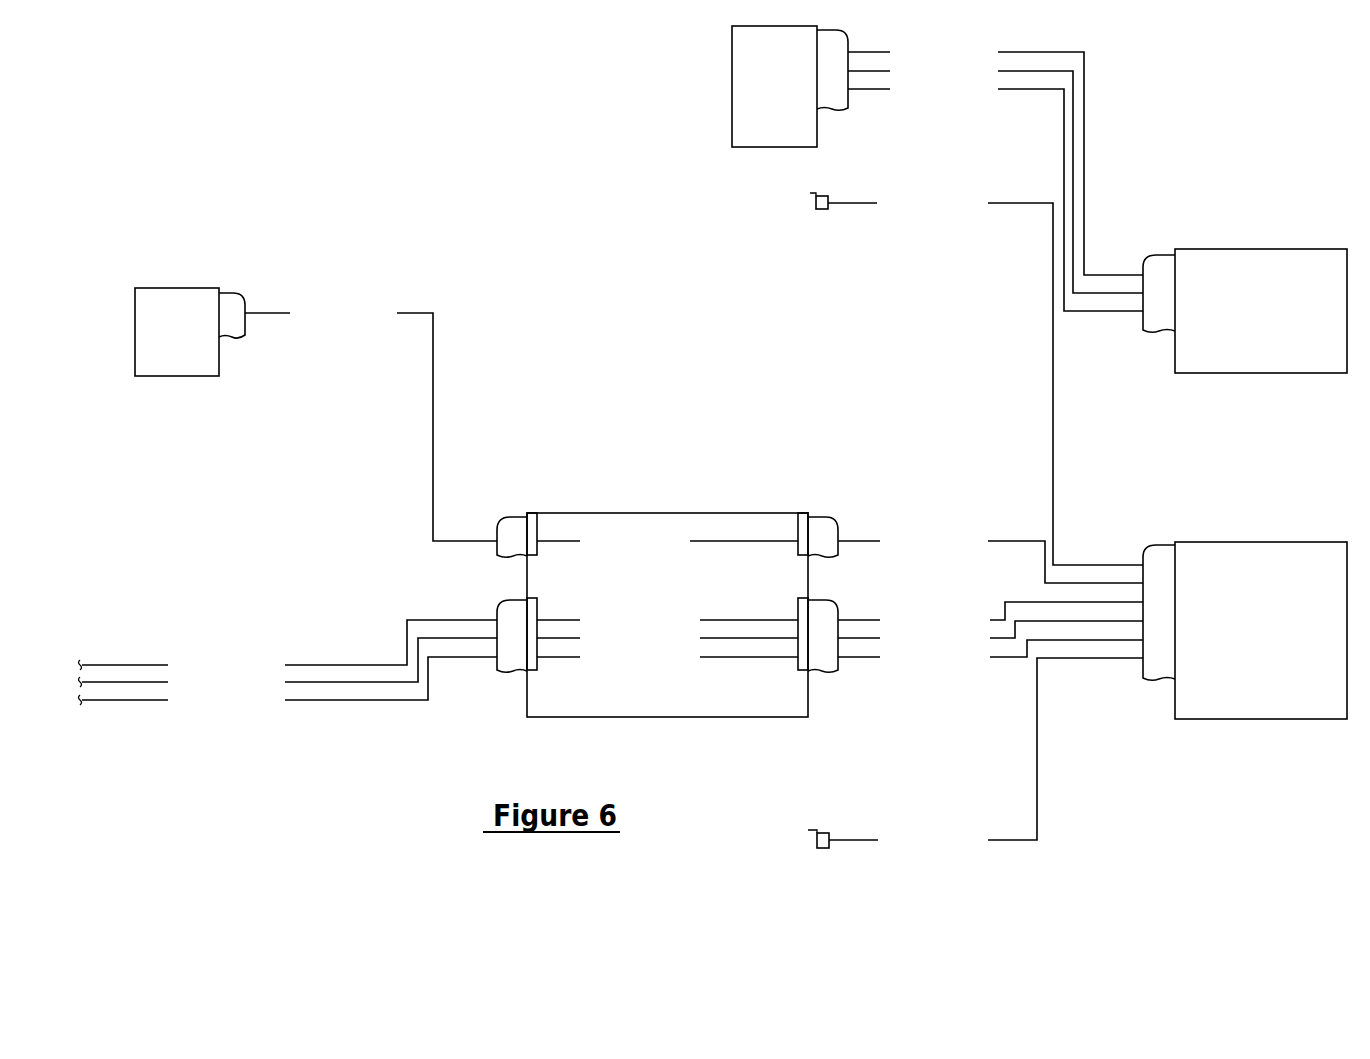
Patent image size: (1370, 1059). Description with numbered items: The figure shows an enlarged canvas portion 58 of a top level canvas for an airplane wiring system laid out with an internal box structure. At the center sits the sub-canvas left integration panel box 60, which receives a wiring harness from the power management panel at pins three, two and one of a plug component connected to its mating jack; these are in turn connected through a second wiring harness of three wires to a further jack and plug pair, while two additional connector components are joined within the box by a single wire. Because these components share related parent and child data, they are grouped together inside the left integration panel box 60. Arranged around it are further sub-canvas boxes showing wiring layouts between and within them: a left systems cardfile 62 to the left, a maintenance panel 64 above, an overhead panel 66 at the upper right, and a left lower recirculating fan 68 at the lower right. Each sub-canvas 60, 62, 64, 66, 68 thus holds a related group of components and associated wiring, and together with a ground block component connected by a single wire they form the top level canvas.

The canvas portion 58 is at (366, 181).
The left integration panel box 60 is at (668, 513).
The left systems cardfile 62 is at (176, 288).
The maintenance panel 64 is at (732, 83).
The overhead panel 66 is at (1260, 249).
The left lower recirculating fan 68 is at (1258, 542).